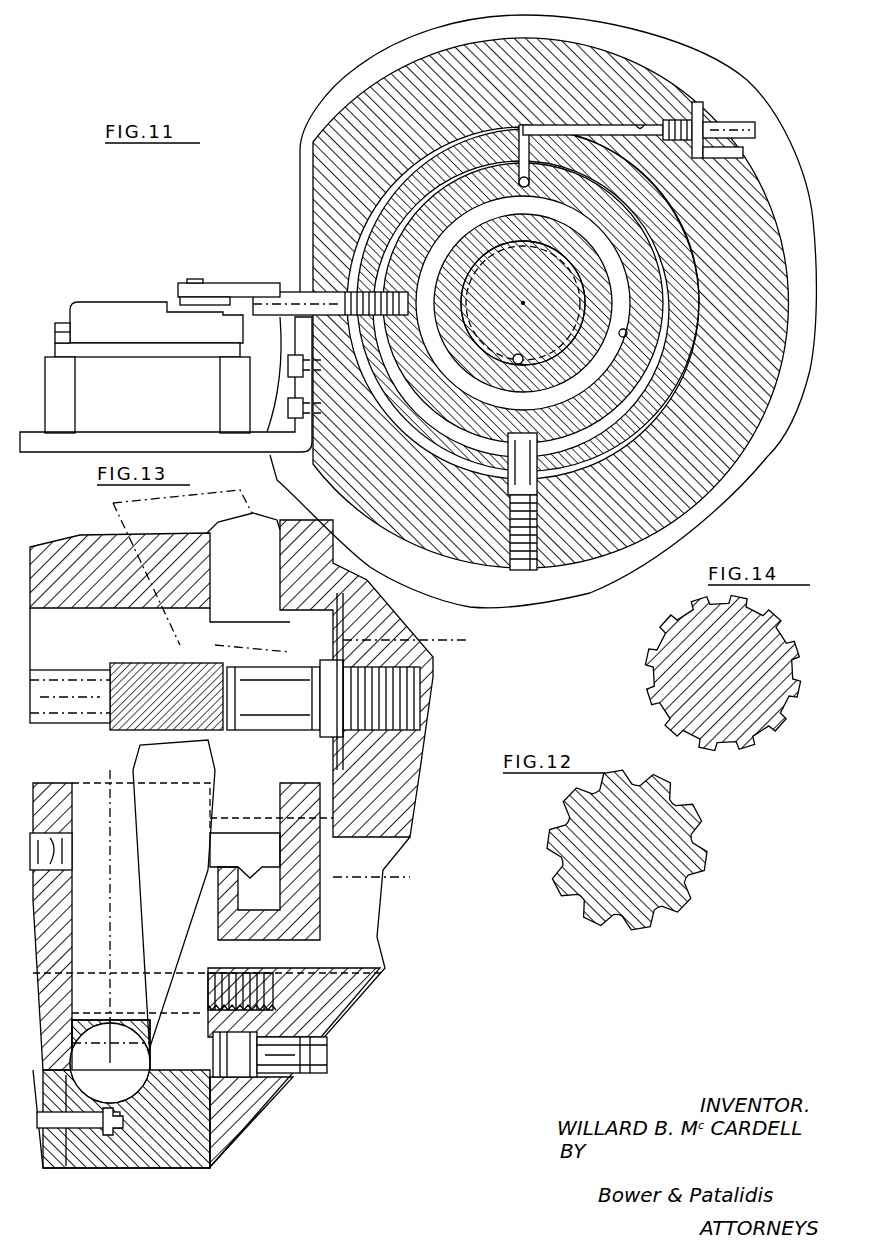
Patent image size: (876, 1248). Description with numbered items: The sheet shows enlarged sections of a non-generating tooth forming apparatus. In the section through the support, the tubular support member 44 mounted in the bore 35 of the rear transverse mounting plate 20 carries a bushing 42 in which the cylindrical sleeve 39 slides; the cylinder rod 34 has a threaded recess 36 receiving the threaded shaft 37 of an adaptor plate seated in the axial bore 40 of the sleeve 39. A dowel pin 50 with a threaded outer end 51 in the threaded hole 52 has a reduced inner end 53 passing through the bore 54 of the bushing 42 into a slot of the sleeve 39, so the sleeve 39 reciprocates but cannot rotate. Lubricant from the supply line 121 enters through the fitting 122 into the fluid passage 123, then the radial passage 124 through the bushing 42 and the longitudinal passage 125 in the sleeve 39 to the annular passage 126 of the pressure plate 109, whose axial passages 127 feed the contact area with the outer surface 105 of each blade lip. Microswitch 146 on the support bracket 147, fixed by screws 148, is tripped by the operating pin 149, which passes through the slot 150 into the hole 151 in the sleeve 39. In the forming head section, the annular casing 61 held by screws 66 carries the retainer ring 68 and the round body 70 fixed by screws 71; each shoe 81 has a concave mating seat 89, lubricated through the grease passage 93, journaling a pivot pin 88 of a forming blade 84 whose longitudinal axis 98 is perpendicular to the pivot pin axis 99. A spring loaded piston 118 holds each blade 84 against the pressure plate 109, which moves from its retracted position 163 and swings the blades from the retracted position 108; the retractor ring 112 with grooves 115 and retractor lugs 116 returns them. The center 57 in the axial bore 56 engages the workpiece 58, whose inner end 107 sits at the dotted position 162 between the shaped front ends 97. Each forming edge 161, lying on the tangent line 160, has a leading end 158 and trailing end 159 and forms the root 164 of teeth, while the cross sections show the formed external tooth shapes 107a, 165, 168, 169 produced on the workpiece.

In FIG. 11, the rear transverse mounting plate 20 is at (705, 524).
In FIG. 11, the cylinder rod 34 is at (700, 400).
In FIG. 11, the bore 35 is at (545, 372).
In FIG. 11, the threaded recess 36 is at (516, 366).
In FIG. 11, the threaded shaft 37 is at (527, 262).
In FIG. 11, the cylindrical sleeve 39 is at (633, 258).
In FIG. 13, the cylindrical sleeve 39 is at (400, 800).
In FIG. 11, the axial bore 40 is at (626, 335).
In FIG. 11, the bushing 42 is at (657, 193).
In FIG. 11, the tubular support member 44 is at (780, 353).
In FIG. 11, the dowel pin 50 is at (516, 578).
In FIG. 11, the threaded outer end 51 is at (532, 578).
In FIG. 11, the threaded hole 52 is at (507, 545).
In FIG. 11, the inner end 53 is at (565, 540).
In FIG. 11, the bore 54 is at (505, 470).
In FIG. 13, the axial bore 56 is at (425, 690).
In FIG. 13, the center 57 is at (268, 703).
In FIG. 13, the workpiece 58 is at (40, 680).
In FIG. 13, the annular casing 61 is at (358, 988).
In FIG. 13, the screws 66 is at (312, 1055).
In FIG. 13, the retainer ring 68 is at (330, 1024).
In FIG. 13, the round body 70 is at (48, 946).
In FIG. 13, the screws 71 is at (40, 996).
In FIG. 13, the shoe 81 is at (195, 1165).
In FIG. 13, the forming blade 84 is at (85, 624).
In FIG. 13, the pivot pin 88 is at (75, 1063).
In FIG. 13, the concave mating seat 89 is at (128, 1082).
In FIG. 13, the grease passage 93 is at (55, 1122).
In FIG. 13, the shaped front end portion 97 is at (118, 740).
In FIG. 13, the longitudinal axis of the blade body 98 is at (112, 958).
In FIG. 13, the longitudinal axis of the pivot pin 99 is at (145, 1050).
In FIG. 13, the outer surface 105 is at (290, 795).
In FIG. 13, the workpiece inner end 107 is at (125, 684).
In FIG. 12, the workpiece inner end 107 is at (690, 872).
In FIG. 14, the gear 107a is at (770, 650).
In FIG. 13, the retracted position 108 is at (125, 518).
In FIG. 13, the pressure plate 109 is at (315, 942).
In FIG. 13, the retractor ring 112 is at (265, 942).
In FIG. 13, the grooves 115 is at (205, 885).
In FIG. 13, the retractor lugs 116 is at (212, 862).
In FIG. 13, the spring loaded piston 118 is at (66, 858).
In FIG. 11, the lubricating fluid supply line 121 is at (757, 130).
In FIG. 11, the fitting 122 is at (700, 128).
In FIG. 11, the fluid passage 123 is at (634, 127).
In FIG. 11, the radial passage 124 is at (640, 124).
In FIG. 11, the longitudinal passage 125 is at (519, 180).
In FIG. 13, the annular passage 126 is at (414, 643).
In FIG. 13, the axial passages 127 is at (290, 575).
In FIG. 11, the microswitch 146 is at (125, 312).
In FIG. 11, the support bracket 147 is at (95, 452).
In FIG. 11, the screws 148 is at (292, 405).
In FIG. 11, the operating pin 149 is at (300, 292).
In FIG. 11, the slot 150 is at (380, 300).
In FIG. 11, the hole 151 is at (405, 292).
In FIG. 13, the leading end 158 is at (110, 730).
In FIG. 13, the trailing end 159 is at (215, 745).
In FIG. 13, the tangent line 160 is at (260, 745).
In FIG. 13, the forming edge 161 is at (128, 733).
In FIG. 13, the workpiece dotted line position 162 is at (268, 646).
In FIG. 13, the retracted position of the pressure plate 163 is at (383, 880).
In FIG. 12, the root 164 is at (685, 818).
In FIG. 12, the notch 165 is at (703, 832).
In FIG. 14, the tooth 168 is at (795, 672).
In FIG. 14, the notch 169 is at (792, 705).